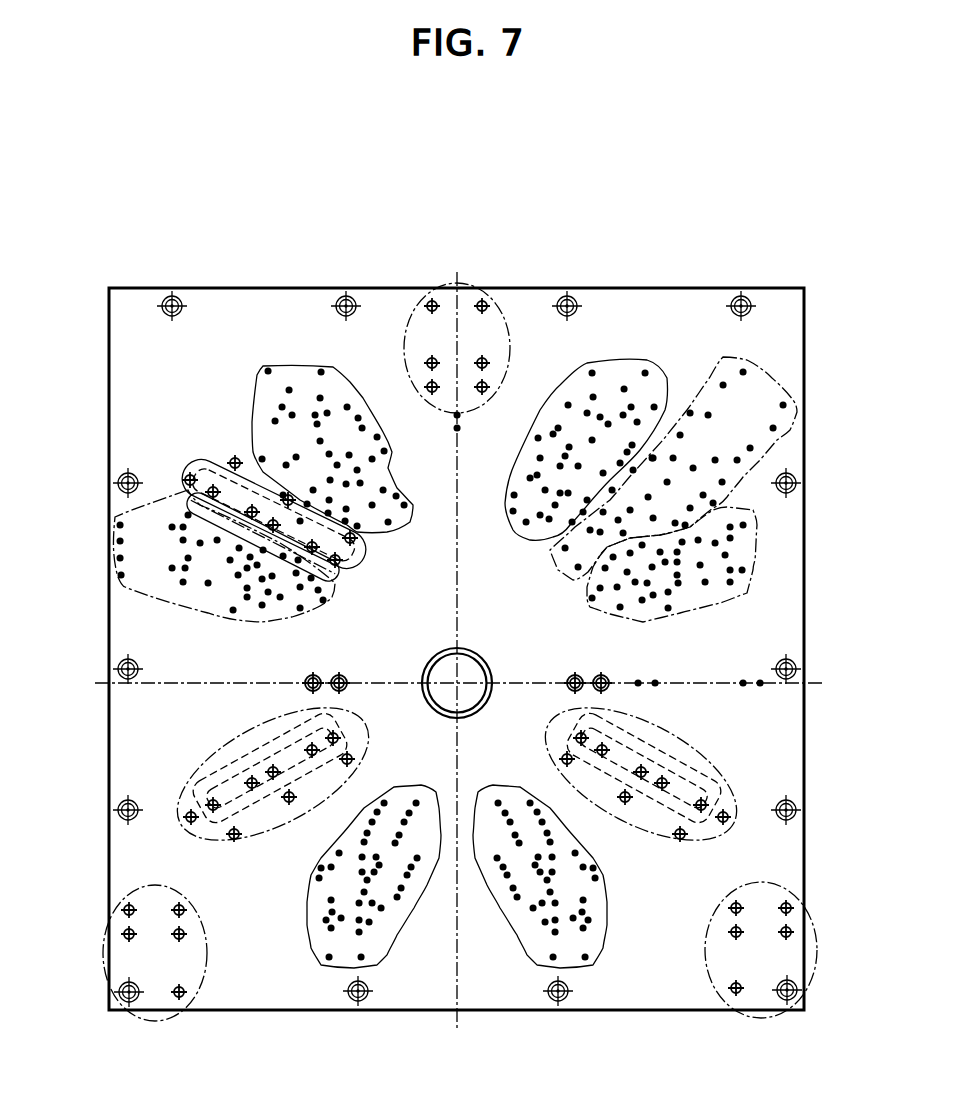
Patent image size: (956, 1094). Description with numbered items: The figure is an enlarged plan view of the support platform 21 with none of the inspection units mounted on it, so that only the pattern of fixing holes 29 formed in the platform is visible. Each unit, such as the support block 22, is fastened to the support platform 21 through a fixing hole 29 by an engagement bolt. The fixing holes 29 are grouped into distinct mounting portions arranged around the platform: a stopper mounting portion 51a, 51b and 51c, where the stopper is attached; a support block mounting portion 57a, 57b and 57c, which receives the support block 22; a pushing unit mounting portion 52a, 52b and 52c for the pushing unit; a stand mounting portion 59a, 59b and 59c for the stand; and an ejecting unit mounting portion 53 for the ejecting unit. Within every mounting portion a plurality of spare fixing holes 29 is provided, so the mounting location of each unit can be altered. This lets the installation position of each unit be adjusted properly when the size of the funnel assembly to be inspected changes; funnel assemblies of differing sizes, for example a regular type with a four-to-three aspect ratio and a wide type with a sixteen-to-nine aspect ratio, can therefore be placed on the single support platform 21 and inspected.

The support platform 21 is at (270, 333).
The support block 22 is at (205, 470).
The fixing holes 29 is at (257, 397).
The stopper mounting portion 51a is at (257, 383).
The stopper mounting portion 51b is at (622, 360).
The stopper mounting portion 51c is at (752, 548).
The pushing unit mounting portion 52a is at (607, 943).
The pushing unit mounting portion 52b is at (310, 943).
The pushing unit mounting portion 52c is at (127, 587).
The ejecting unit mounting portion 53 is at (775, 385).
The support block mounting portion 57a is at (187, 473).
The support block mounting portion 57b is at (182, 787).
The support block mounting portion 57c is at (733, 787).
The stand mounting portion 59a is at (398, 288).
The stand mounting portion 59b is at (107, 913).
The stand mounting portion 59c is at (808, 913).